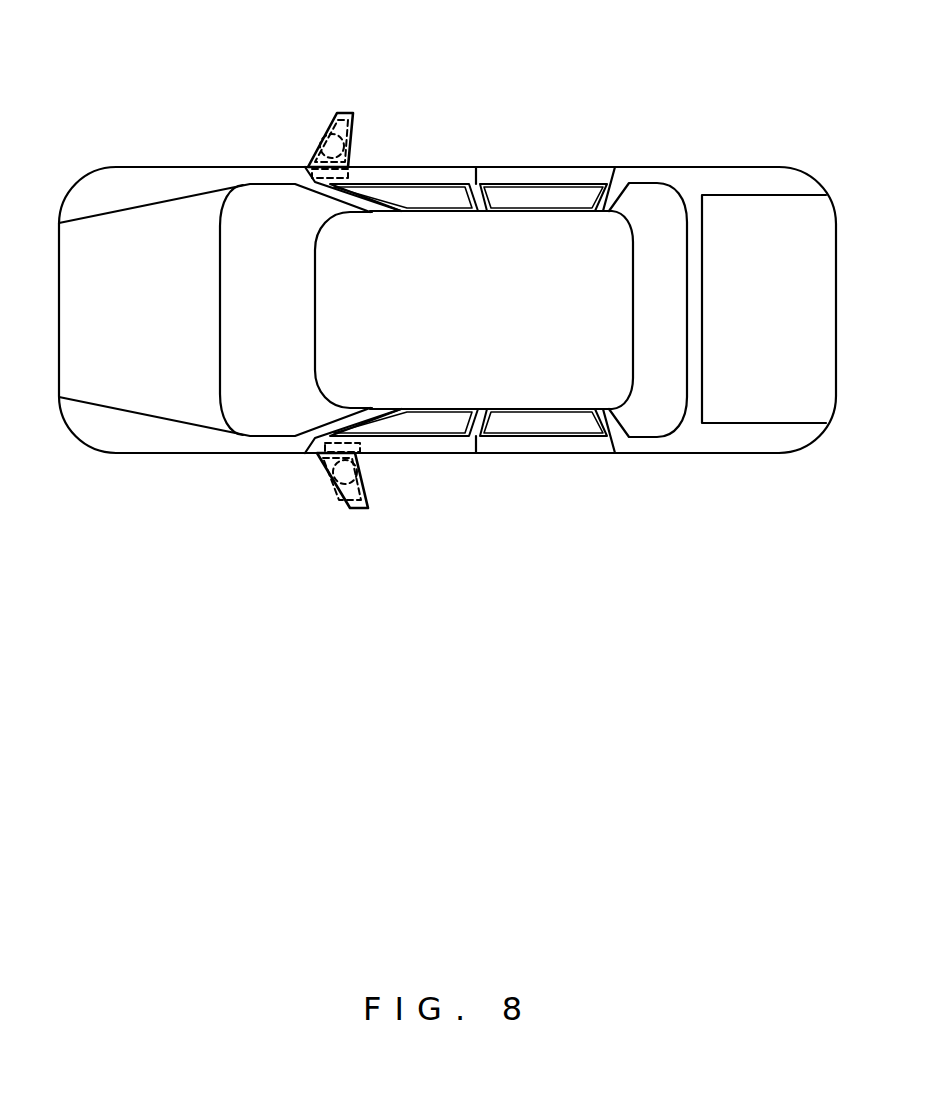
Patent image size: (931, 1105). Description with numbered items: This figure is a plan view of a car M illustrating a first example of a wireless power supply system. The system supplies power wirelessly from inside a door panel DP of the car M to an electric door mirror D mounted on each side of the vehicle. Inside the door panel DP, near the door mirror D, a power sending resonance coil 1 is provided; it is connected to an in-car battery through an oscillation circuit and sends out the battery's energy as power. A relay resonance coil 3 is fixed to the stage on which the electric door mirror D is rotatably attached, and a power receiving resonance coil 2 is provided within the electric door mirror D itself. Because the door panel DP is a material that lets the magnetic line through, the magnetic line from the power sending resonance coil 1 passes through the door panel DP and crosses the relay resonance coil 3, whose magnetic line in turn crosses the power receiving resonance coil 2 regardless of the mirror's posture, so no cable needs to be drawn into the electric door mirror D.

The power sending resonance coil 1 is at (348, 174).
The power receiving resonance coil 2 is at (316, 152).
The relay resonance coil 3 is at (339, 137).
The electric door mirror D is at (337, 112).
The door panel DP is at (423, 166).
The car M is at (541, 166).